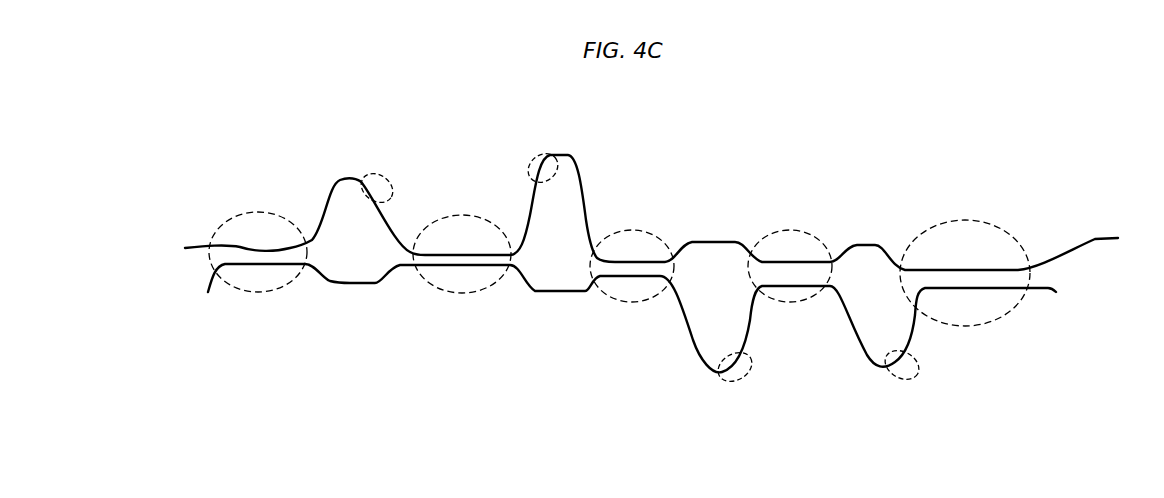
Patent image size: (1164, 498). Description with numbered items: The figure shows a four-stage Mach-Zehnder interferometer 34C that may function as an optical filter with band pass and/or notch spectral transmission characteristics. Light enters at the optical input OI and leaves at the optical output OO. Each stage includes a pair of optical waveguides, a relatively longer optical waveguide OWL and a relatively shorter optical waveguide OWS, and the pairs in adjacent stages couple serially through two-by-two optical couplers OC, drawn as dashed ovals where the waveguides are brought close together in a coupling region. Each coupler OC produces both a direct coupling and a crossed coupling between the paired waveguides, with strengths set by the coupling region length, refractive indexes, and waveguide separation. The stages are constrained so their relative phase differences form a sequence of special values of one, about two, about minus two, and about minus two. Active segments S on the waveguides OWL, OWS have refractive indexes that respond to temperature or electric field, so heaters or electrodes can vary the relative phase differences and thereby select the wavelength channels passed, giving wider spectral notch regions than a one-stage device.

The optical input OI is at (193, 242).
The optical output OO is at (1100, 235).
The 2×2 optical coupler OC is at (260, 292).
The relatively longer optical waveguide OWL is at (868, 385).
The relatively shorter optical waveguide OWS is at (343, 283).
The active segment S is at (378, 172).
The Mach-Zehnder interferometer 34C is at (171, 364).